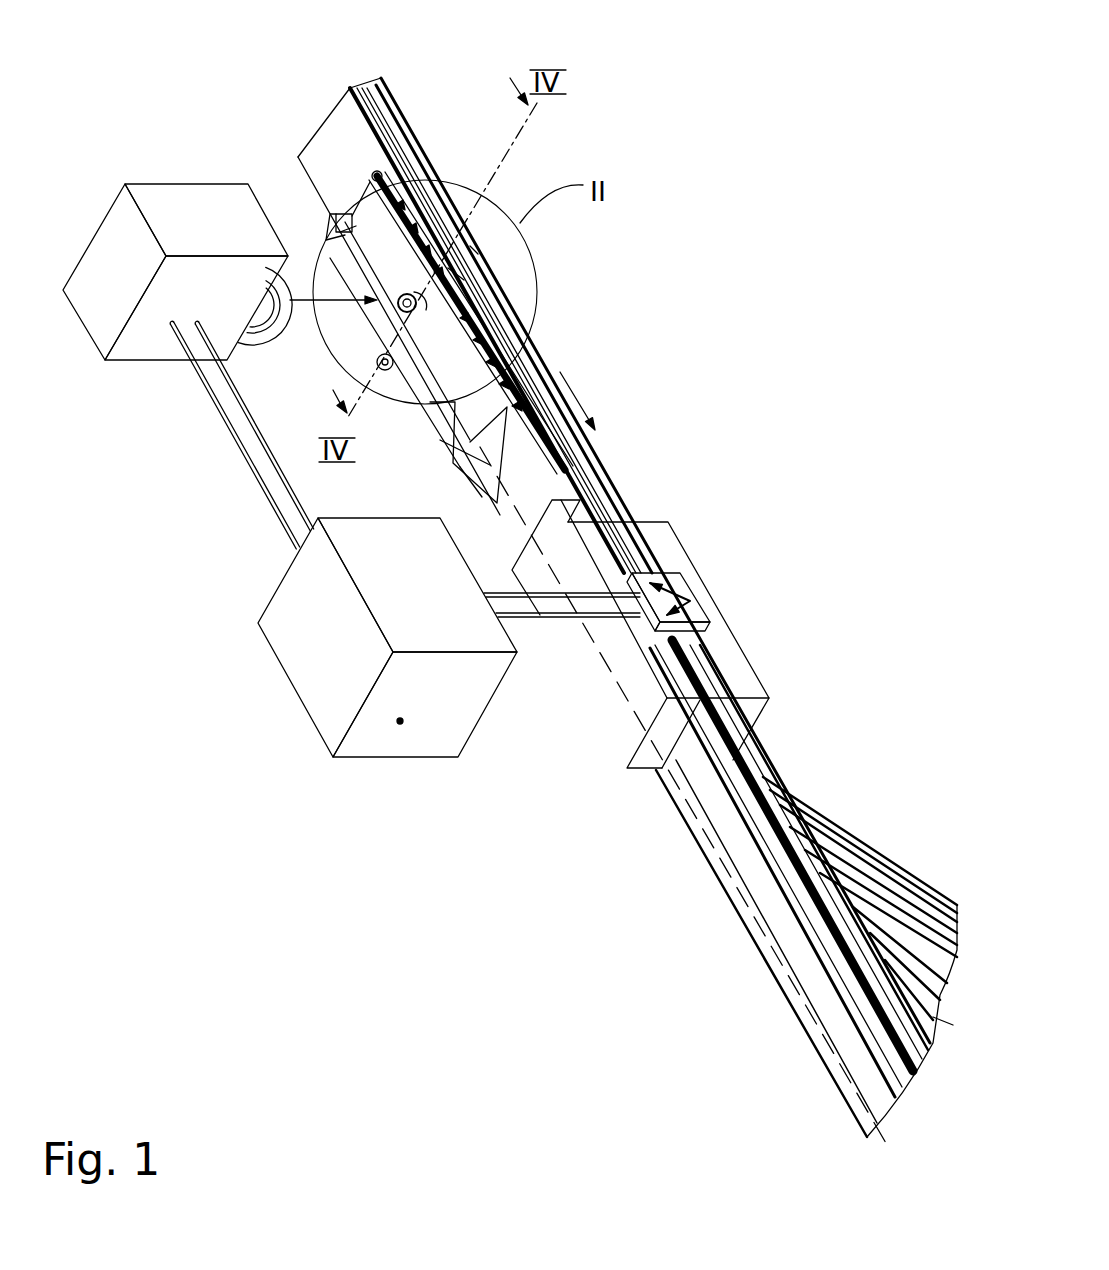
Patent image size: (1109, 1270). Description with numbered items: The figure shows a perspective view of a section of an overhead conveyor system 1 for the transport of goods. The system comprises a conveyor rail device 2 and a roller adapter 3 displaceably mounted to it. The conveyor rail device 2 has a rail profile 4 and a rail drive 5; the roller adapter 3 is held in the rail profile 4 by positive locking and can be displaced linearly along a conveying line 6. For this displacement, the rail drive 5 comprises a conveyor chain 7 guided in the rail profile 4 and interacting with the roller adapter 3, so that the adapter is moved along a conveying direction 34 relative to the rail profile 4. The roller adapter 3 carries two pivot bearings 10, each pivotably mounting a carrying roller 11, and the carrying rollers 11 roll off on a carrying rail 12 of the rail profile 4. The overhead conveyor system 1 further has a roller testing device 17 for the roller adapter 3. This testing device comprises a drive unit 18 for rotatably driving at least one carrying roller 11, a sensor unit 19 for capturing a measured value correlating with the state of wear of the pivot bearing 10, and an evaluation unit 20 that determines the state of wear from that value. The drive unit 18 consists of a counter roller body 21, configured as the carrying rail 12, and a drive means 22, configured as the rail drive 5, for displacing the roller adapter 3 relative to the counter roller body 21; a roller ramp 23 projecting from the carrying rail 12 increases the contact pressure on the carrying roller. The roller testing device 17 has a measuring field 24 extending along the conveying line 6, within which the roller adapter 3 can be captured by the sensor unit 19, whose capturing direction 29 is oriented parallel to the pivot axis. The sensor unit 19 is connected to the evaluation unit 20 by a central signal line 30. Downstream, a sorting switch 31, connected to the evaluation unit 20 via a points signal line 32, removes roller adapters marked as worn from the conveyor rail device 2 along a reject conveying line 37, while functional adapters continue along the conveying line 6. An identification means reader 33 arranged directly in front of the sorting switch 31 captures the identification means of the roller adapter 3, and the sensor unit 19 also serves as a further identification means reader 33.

The overhead conveyor system 1 is at (712, 337).
The conveyor rail device 2 is at (809, 744).
The roller adapter 3 is at (364, 370).
The rail profile 4 is at (371, 92).
The rail drive 5 is at (457, 273).
The conveying line 6 is at (735, 882).
The conveyor chain 7 is at (537, 294).
The pivot bearing 10 is at (533, 295).
The carrying roller 11 is at (415, 235).
The carrying rail 12 is at (346, 222).
The roller testing device 17 is at (382, 784).
The drive unit 18 is at (512, 306).
The sensor unit 19 is at (181, 212).
The evaluation unit 20 is at (417, 735).
The counter roller body 21 is at (326, 142).
The drive means 22 is at (475, 245).
The roller ramp 23 is at (340, 226).
The measuring field 24 is at (456, 443).
The capturing direction 29 is at (300, 333).
The central signal line 30 is at (221, 413).
The sorting switch 31 is at (615, 727).
The points signal line 32 is at (554, 597).
The identification means reader 33 is at (580, 510).
The conveying direction 34 is at (580, 400).
The reject conveying line 37 is at (733, 847).